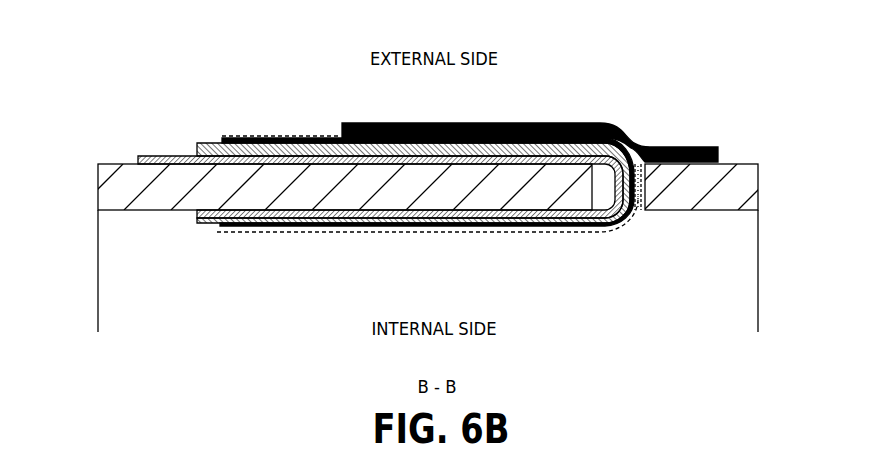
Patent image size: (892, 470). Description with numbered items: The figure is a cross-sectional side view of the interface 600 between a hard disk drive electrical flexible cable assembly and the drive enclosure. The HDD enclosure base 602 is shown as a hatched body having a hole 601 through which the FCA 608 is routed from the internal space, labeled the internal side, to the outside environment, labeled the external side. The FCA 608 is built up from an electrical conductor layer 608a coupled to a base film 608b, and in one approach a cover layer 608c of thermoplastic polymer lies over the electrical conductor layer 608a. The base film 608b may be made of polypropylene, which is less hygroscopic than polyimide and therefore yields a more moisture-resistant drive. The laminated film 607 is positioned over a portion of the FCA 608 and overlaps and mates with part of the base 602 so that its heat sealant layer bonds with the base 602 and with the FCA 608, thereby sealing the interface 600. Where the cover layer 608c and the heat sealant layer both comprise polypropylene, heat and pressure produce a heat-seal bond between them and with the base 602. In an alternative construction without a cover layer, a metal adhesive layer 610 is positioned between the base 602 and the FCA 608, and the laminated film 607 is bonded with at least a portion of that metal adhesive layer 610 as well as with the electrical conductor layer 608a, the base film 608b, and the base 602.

The interface 600 is at (164, 68).
The hole 601 is at (640, 214).
The HDD enclosure base 602 is at (106, 192).
The laminated film 607 is at (604, 123).
The FCA 608 is at (198, 152).
The electrical conductor layer 608a is at (262, 227).
The base film 608b is at (212, 228).
The cover layer 608c is at (325, 233).
The metal adhesive layer 610 is at (154, 157).